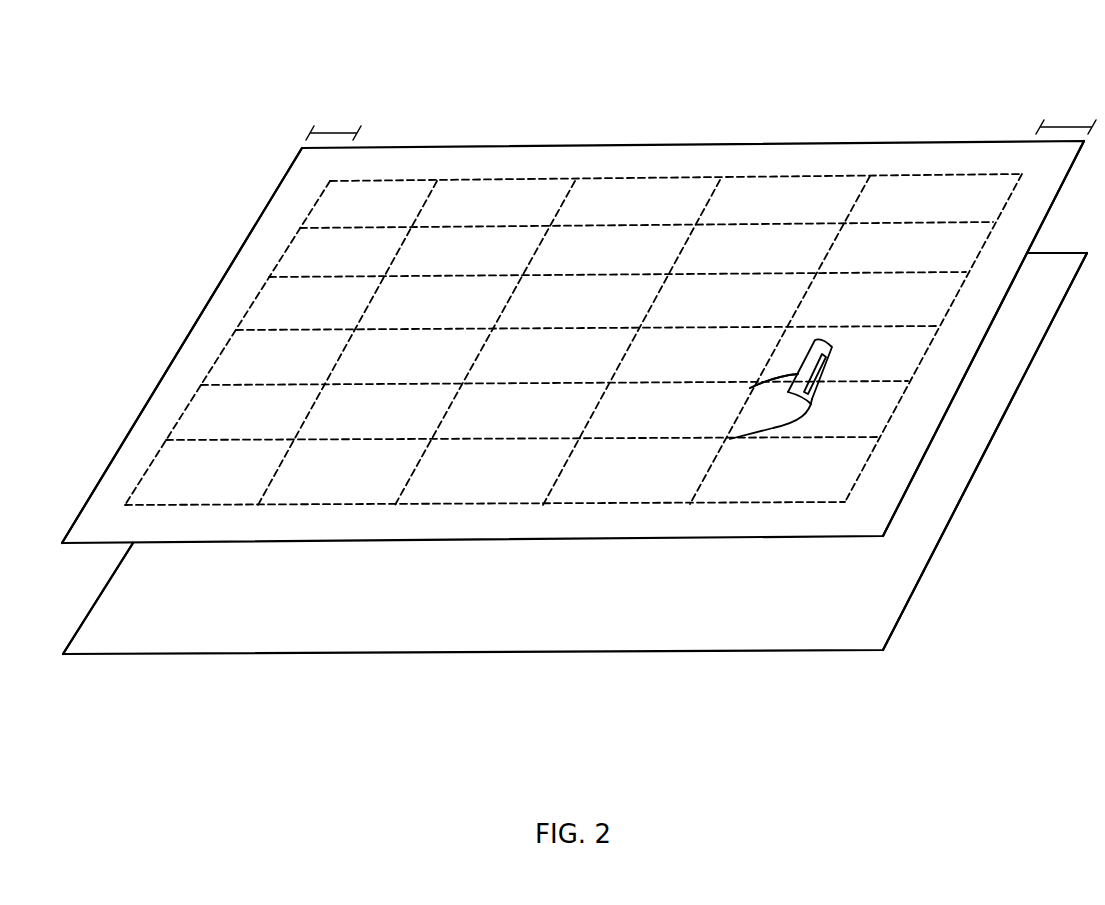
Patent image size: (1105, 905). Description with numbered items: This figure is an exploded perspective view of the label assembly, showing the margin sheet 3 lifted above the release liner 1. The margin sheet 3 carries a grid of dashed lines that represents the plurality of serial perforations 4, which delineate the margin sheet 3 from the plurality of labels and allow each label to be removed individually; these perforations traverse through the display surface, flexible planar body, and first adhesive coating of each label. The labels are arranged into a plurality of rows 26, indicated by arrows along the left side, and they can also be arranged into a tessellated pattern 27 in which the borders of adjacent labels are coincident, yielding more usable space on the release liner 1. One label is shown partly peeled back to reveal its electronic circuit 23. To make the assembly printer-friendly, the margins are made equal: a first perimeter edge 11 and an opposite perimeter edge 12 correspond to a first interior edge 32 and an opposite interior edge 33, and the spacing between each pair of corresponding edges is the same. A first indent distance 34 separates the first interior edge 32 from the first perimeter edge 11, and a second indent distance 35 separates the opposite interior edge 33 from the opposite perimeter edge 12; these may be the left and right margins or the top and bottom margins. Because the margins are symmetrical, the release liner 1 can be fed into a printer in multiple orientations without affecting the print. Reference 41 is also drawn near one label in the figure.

The release liner 1 is at (455, 626).
The margin sheet 3 is at (660, 157).
The plurality of serial perforations 4 is at (792, 226).
The first perimeter edge 11 is at (105, 586).
The opposite perimeter edge 12 is at (905, 602).
The electronic circuit 23 is at (830, 379).
The plurality of rows 26 is at (292, 198).
The tessellated pattern 27 is at (1032, 164).
The first interior edge 32 is at (155, 455).
The opposite interior edge 33 is at (875, 443).
The first indent distance 34 is at (330, 133).
The second indent distance 35 is at (1062, 127).
The cell opening 41 is at (723, 392).